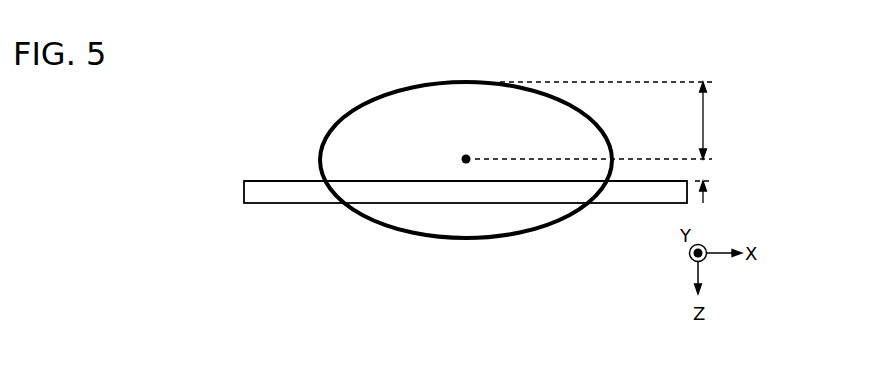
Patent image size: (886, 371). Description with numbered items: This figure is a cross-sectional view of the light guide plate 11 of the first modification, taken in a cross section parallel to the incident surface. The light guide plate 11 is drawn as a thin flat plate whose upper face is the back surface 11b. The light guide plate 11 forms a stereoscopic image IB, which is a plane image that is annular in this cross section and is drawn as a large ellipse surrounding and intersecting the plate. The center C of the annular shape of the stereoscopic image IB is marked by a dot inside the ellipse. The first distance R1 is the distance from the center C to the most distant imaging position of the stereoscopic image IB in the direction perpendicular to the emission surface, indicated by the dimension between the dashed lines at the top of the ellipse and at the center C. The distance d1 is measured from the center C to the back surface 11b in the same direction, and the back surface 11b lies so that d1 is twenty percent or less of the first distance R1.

The light guide plate 11 is at (244, 191).
The back surface 11b is at (275, 181).
The stereoscopic image IB is at (352, 113).
The center C is at (461, 159).
The first distance R1 is at (718, 120).
The distance d1 is at (717, 182).